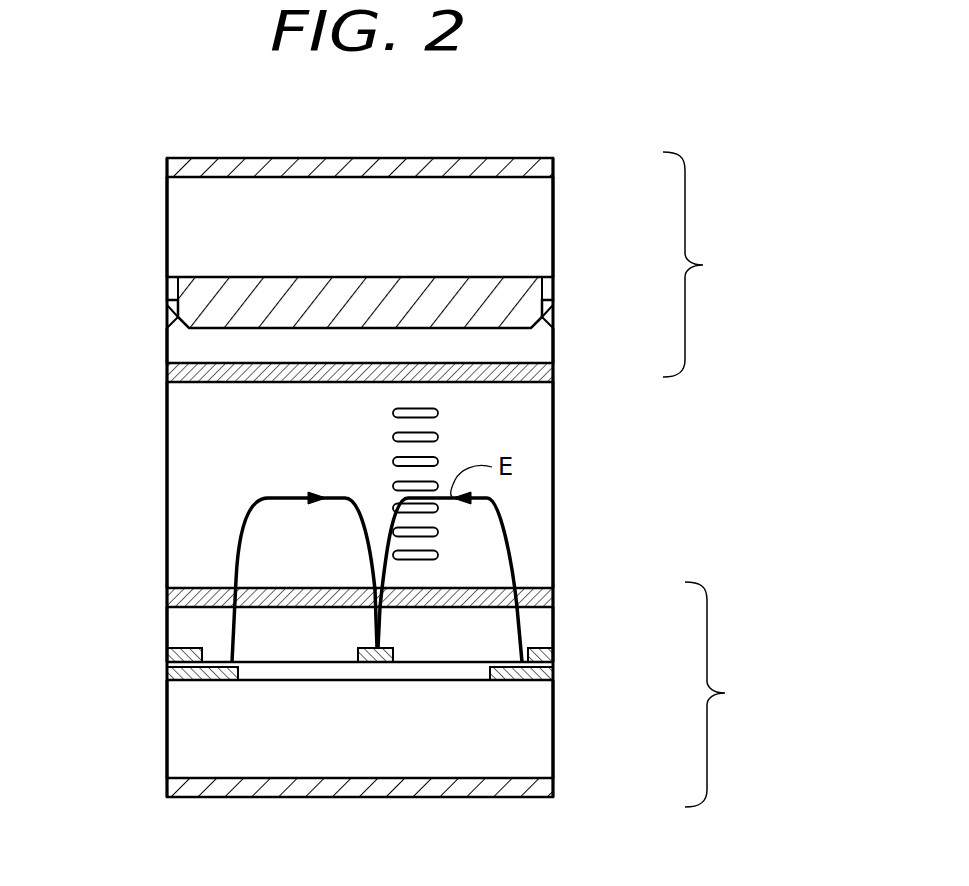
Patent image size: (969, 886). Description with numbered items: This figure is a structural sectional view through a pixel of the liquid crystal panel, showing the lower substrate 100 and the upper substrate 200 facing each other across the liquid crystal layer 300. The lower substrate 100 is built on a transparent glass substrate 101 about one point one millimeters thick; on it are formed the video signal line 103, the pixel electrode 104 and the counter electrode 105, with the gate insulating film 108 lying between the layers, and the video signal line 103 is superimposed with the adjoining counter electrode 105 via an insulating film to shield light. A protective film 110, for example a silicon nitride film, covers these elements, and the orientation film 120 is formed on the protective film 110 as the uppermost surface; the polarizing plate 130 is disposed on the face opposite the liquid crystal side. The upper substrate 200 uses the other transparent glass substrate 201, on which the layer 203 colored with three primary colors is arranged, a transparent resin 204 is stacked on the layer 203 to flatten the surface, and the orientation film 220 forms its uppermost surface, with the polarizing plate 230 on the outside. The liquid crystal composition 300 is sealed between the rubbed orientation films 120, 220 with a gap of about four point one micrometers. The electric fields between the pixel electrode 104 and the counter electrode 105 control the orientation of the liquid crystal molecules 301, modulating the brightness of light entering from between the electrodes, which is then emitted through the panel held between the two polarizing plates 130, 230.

The lower substrate 100 is at (739, 694).
The transparent glass substrate 101 is at (543, 742).
The video (drain) signal line 103 is at (168, 660).
The pixel electrode 104 is at (368, 662).
The counter electrode 105 is at (165, 675).
The gate insulating film 108 is at (257, 675).
The protective film 110 is at (177, 623).
The orientation film 120 is at (545, 598).
The polarizing plate 130 is at (553, 785).
The upper substrate 200 is at (716, 264).
The transparent glass substrate 201 is at (545, 228).
The layer colored with three primary colors 203 is at (348, 292).
The transparent resin 204 is at (543, 345).
The orientation film 220 is at (548, 375).
The polarizing plate 230 is at (545, 165).
The liquid crystal layer 300 is at (542, 418).
The liquid crystal molecules 301 is at (438, 437).